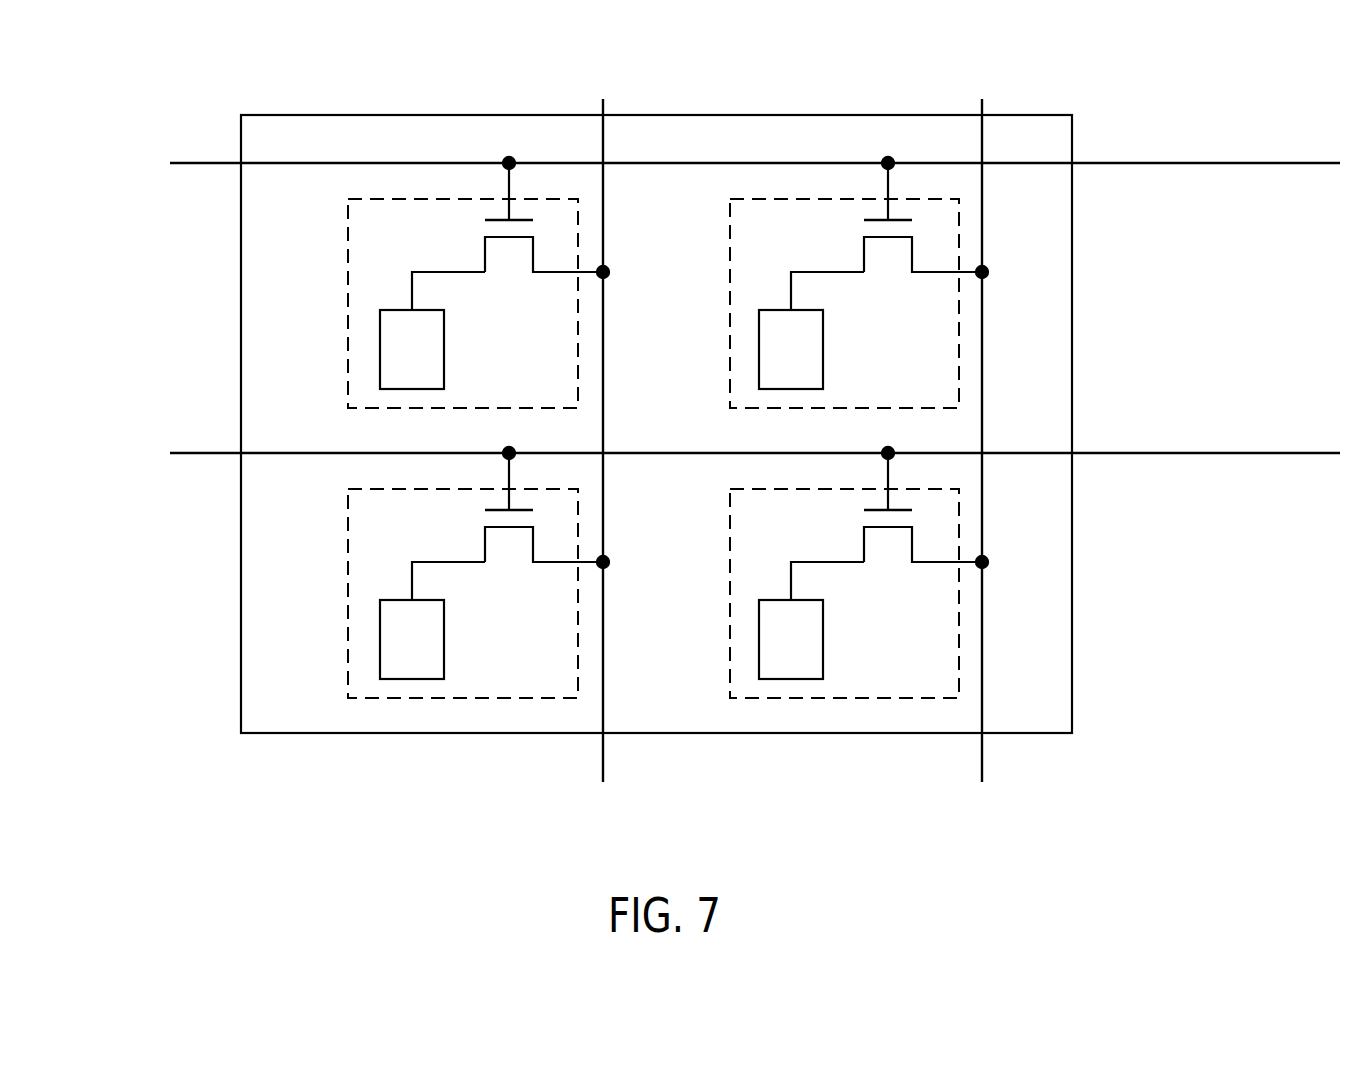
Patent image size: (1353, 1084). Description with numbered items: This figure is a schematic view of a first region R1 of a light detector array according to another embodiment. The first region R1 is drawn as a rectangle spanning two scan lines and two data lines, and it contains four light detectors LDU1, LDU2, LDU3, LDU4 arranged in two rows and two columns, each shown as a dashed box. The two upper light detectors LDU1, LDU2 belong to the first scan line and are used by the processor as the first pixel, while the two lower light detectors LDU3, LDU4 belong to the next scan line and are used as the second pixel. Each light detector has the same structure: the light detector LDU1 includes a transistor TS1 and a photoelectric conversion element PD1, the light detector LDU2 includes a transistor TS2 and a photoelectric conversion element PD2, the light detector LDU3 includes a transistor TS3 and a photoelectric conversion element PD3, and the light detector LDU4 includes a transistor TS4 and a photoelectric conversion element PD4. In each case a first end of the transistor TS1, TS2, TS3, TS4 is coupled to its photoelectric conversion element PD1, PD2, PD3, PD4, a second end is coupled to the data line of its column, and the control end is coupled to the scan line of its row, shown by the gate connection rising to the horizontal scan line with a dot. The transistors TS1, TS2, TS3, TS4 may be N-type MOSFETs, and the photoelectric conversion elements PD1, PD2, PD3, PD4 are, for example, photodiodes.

The first region R1 is at (1035, 115).
The light detector LDU1 is at (348, 293).
The light detector LDU2 is at (730, 293).
The light detector LDU3 is at (348, 583).
The light detector LDU4 is at (730, 583).
The transistor TS1 is at (511, 234).
The transistor TS2 is at (890, 234).
The transistor TS3 is at (511, 524).
The transistor TS4 is at (890, 524).
The photoelectric conversion element PD1 is at (444, 328).
The photoelectric conversion element PD2 is at (823, 328).
The photoelectric conversion element PD3 is at (444, 618).
The photoelectric conversion element PD4 is at (823, 618).